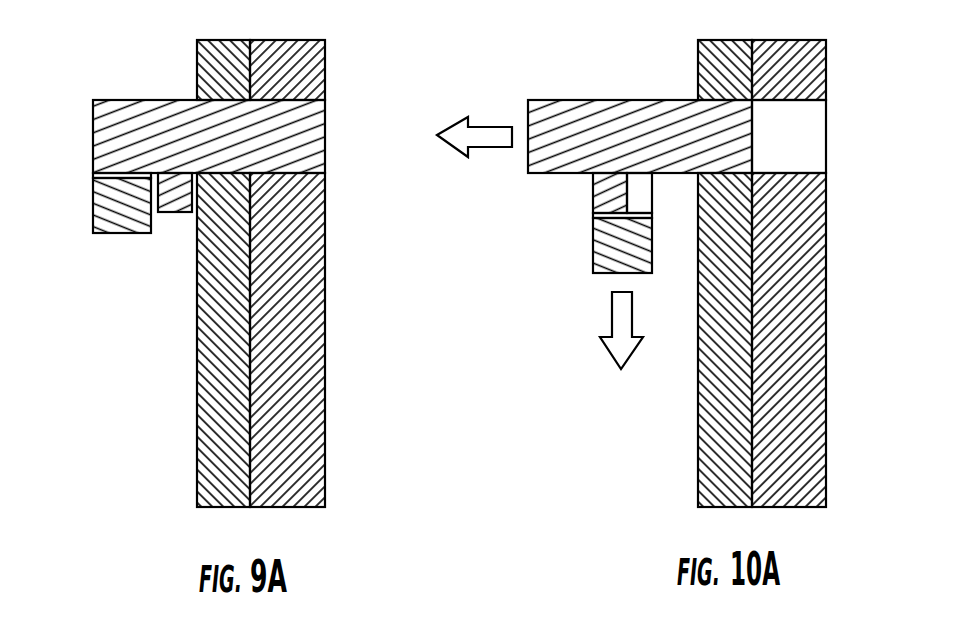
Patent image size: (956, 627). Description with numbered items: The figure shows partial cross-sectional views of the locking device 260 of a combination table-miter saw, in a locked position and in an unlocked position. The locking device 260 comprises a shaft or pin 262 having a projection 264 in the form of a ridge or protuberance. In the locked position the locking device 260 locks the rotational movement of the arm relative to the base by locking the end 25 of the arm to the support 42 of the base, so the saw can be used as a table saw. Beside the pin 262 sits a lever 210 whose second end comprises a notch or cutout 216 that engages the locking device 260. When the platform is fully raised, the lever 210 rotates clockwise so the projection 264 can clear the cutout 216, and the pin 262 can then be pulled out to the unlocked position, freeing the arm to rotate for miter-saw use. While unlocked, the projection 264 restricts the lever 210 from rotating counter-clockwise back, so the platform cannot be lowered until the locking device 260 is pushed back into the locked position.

In FIG. 9A, the end 25 is at (208, 478).
In FIG. 10A, the end 25 is at (713, 472).
In FIG. 9A, the support 42 is at (313, 490).
In FIG. 10A, the support 42 is at (813, 485).
In FIG. 9A, the locking device 260 is at (180, 164).
In FIG. 10A, the locking device 260 is at (618, 165).
In FIG. 9A, the pin 262 is at (150, 112).
In FIG. 10A, the pin 262 is at (648, 115).
In FIG. 9A, the cutout 216 is at (93, 174).
In FIG. 10A, the cutout 216 is at (593, 216).
In FIG. 9A, the lever 210 is at (107, 223).
In FIG. 10A, the lever 210 is at (605, 265).
In FIG. 9A, the projection 264 is at (175, 203).
In FIG. 10A, the projection 264 is at (593, 192).